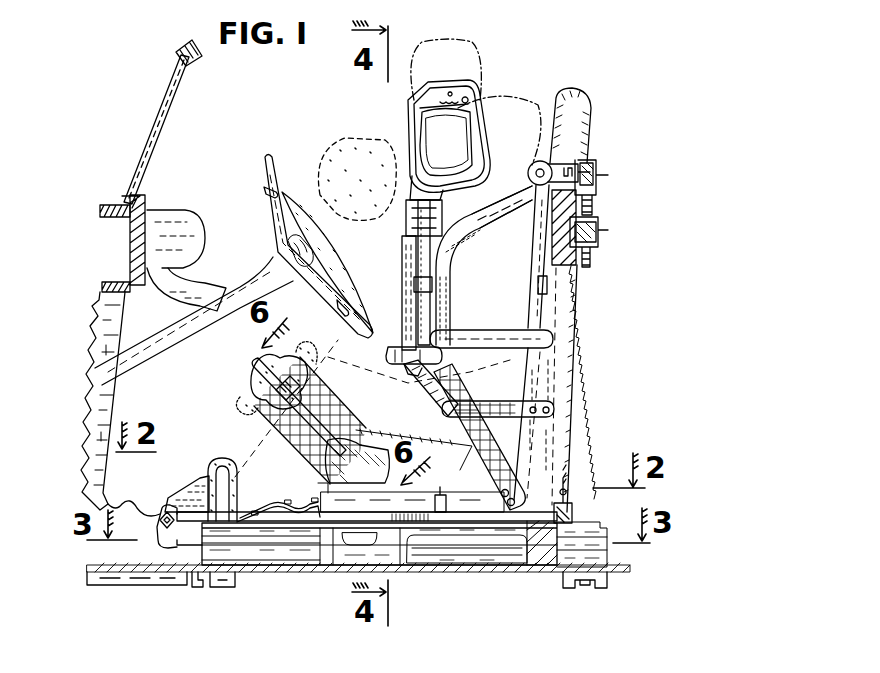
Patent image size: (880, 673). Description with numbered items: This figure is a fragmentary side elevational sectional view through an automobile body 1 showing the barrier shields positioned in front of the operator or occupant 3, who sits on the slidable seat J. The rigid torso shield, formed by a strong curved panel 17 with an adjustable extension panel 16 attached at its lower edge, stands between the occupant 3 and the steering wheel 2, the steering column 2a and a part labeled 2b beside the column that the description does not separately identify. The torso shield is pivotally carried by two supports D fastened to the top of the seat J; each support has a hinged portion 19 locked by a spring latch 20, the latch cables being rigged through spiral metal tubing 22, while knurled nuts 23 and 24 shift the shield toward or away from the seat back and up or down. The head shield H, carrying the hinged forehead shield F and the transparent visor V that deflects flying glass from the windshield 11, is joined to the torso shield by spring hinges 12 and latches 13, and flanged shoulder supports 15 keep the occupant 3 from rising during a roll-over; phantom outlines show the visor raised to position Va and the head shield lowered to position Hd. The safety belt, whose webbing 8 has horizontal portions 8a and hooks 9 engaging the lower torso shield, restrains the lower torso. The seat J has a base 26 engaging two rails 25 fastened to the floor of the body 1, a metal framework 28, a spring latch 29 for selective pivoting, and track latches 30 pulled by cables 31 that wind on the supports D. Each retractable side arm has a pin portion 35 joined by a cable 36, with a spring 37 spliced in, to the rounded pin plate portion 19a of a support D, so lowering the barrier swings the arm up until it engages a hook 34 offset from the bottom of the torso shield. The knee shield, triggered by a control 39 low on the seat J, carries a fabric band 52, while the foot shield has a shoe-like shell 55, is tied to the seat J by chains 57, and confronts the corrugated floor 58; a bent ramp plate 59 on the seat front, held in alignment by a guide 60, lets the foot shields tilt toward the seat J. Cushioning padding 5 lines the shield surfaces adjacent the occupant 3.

The automobile body 1 is at (280, 568).
The steering wheel 2 is at (267, 155).
The steering column 2a is at (165, 335).
The lever bracket 2b is at (198, 284).
The occupant or operator 3 is at (372, 408).
The cushioning lining or padding 5 is at (302, 192).
The webbing 8 is at (470, 430).
The horizontal portions 8a is at (488, 404).
The hooks 9 is at (412, 382).
The windshield 11 is at (152, 152).
The hinges 12 is at (408, 198).
The latches 13 is at (478, 206).
The shoulder supports 15 is at (506, 198).
The adjustable extension panel 16 is at (412, 300).
The curved panel 17 is at (410, 252).
The hinged portions 19 is at (533, 162).
The rounded pin plate portion 19a is at (547, 226).
The spring latches 20 is at (528, 168).
The spiral metal tubing 22 is at (442, 250).
The knurled nuts 23 is at (594, 162).
The knurled nuts 24 is at (608, 231).
The rails 25 is at (520, 560).
The base 26 is at (473, 532).
The metal framework 28 is at (549, 373).
The spring latch 29 is at (448, 503).
The track latches 30 is at (574, 513).
The cables 31 is at (565, 394).
The hooks 34 is at (420, 340).
The pin portion 35 is at (555, 339).
The cable 36 is at (536, 312).
The spring 37 is at (538, 285).
The control 39 is at (325, 487).
The fabric band 52 is at (321, 383).
The shoe-like shell 55 is at (200, 484).
The chains 57 is at (300, 483).
The corrugated floor 58 is at (128, 505).
The bent plate 59 is at (300, 522).
The guide 60 is at (182, 550).
The supports D is at (569, 152).
The forehead shield F is at (446, 142).
The head shield H is at (488, 117).
The lowered position of head shield Hd is at (356, 133).
The slidable seat J is at (370, 414).
The visor shield V is at (429, 140).
The raised position of visor Va is at (476, 78).